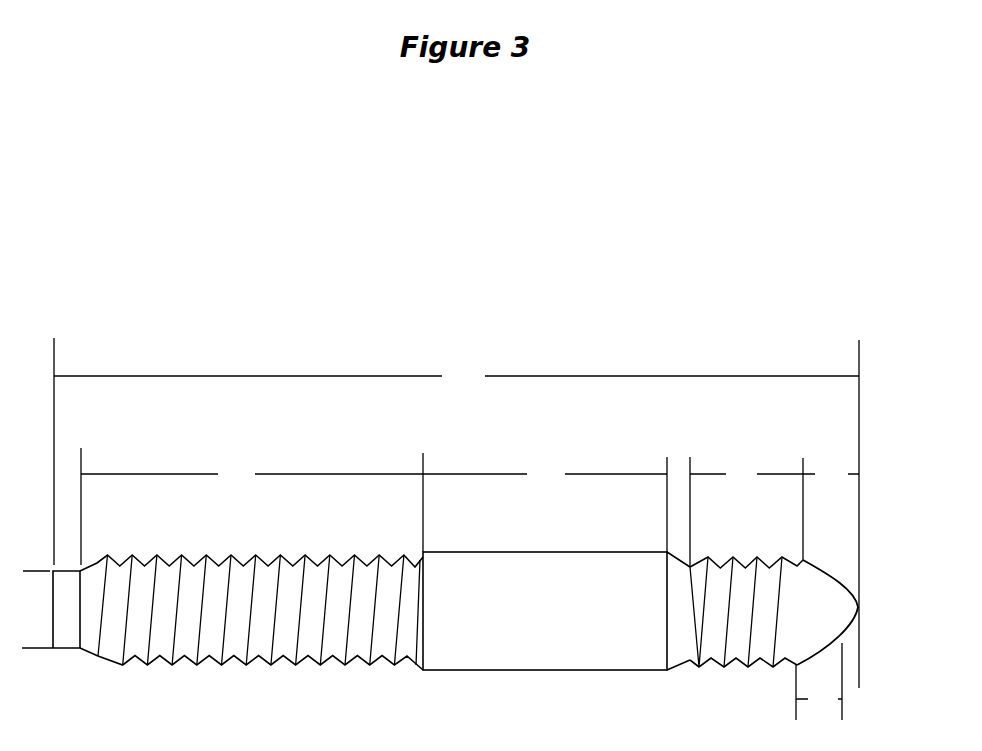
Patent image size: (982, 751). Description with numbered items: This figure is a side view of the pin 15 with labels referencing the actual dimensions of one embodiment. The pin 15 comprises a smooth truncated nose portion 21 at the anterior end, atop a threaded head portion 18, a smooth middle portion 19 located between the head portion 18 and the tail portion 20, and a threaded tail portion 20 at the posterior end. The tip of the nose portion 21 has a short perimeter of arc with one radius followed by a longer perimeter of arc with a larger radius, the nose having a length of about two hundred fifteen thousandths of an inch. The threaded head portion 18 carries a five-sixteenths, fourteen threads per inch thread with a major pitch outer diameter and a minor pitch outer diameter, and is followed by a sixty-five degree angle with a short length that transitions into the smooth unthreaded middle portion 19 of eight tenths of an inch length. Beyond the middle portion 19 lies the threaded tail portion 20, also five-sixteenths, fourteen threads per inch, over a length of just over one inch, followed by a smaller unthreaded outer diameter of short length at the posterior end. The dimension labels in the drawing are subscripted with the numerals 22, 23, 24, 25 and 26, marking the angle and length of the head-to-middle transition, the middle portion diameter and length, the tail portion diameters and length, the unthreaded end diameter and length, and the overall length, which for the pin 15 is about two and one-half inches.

The pin 15 is at (53, 287).
The threaded head portion 18 is at (743, 567).
The smooth middle portion 19 is at (546, 552).
The threaded tail portion 20 is at (233, 554).
The smooth truncated nose portion 21 is at (828, 576).
The transition 22 is at (681, 463).
The shank length region 23 is at (562, 688).
The thread length region 24 is at (320, 690).
The head 25 is at (70, 458).
The overall length 26 is at (456, 513).